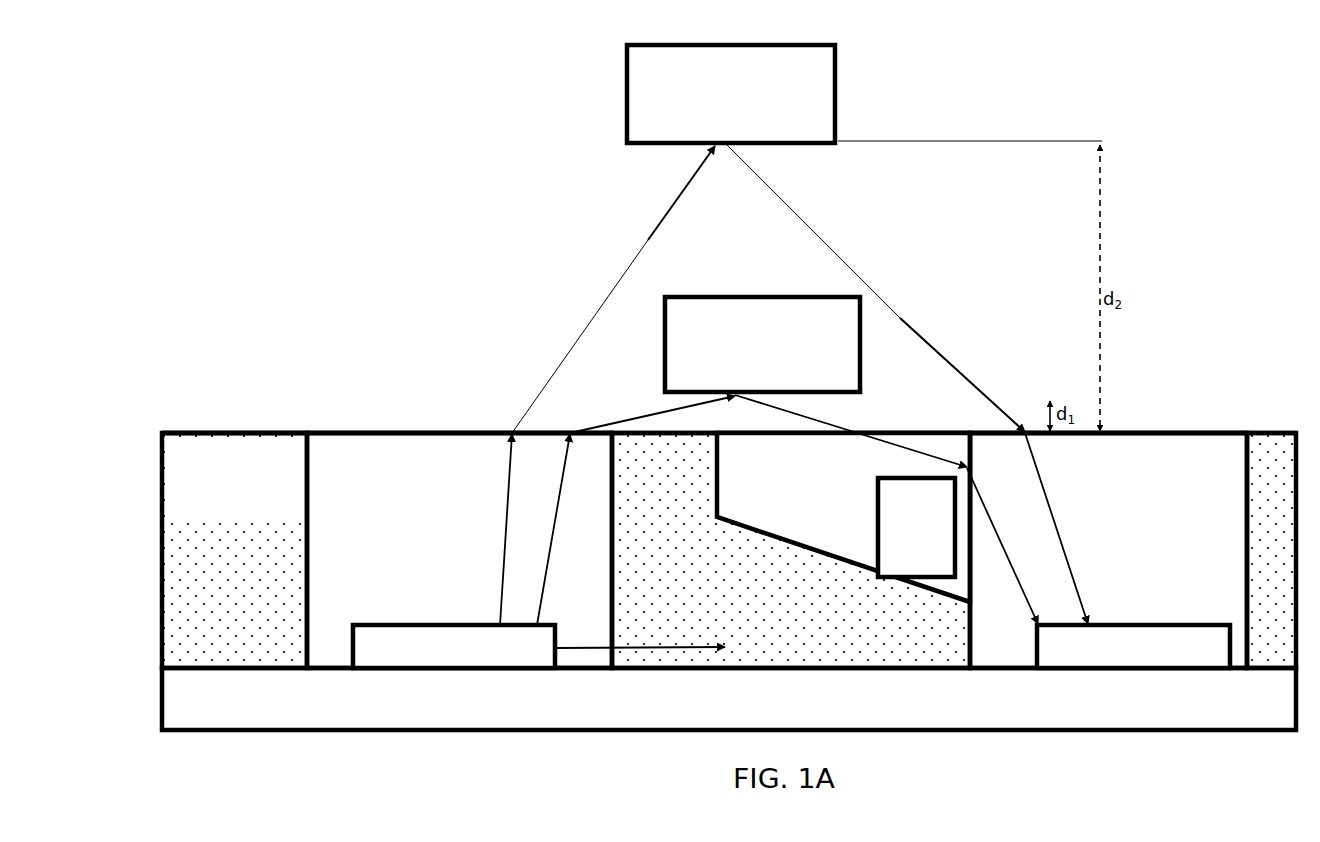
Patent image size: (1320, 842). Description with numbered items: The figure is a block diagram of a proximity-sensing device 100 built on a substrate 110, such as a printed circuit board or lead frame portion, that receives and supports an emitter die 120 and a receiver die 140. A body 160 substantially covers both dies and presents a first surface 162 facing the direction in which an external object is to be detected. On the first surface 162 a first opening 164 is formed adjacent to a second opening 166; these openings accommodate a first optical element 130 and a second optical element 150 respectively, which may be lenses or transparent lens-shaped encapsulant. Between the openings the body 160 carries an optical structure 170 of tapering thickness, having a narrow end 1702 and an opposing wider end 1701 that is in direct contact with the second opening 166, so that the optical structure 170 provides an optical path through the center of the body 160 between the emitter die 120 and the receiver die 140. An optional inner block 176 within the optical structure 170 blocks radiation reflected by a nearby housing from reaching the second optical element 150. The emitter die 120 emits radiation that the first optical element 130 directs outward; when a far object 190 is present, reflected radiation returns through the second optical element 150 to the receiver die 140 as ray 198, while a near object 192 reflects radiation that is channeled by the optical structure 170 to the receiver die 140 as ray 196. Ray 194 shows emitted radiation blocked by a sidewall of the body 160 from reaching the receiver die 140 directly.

The proximity-sensing device 100 is at (280, 138).
The substrate 110 is at (729, 699).
The emitter die 120 is at (454, 646).
The first optical element 130 is at (459, 550).
The receiver die 140 is at (1133, 646).
The second optical element 150 is at (1108, 550).
The body 160 is at (729, 550).
The first surface 162 is at (275, 436).
The first opening 164 is at (442, 444).
The second opening 166 is at (1161, 440).
The optical structure 170 is at (791, 550).
The inner block 176 is at (916, 527).
The far object 190 is at (731, 94).
The near object 192 is at (762, 344).
The ray 194 is at (640, 647).
The ray 196 is at (873, 428).
The ray 198 is at (845, 256).
The wider end 1701 is at (967, 568).
The narrow end 1702 is at (728, 497).